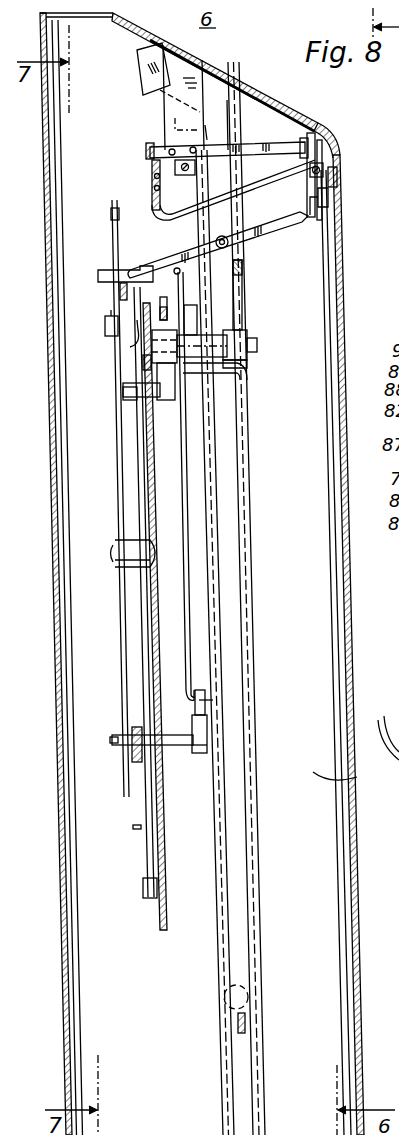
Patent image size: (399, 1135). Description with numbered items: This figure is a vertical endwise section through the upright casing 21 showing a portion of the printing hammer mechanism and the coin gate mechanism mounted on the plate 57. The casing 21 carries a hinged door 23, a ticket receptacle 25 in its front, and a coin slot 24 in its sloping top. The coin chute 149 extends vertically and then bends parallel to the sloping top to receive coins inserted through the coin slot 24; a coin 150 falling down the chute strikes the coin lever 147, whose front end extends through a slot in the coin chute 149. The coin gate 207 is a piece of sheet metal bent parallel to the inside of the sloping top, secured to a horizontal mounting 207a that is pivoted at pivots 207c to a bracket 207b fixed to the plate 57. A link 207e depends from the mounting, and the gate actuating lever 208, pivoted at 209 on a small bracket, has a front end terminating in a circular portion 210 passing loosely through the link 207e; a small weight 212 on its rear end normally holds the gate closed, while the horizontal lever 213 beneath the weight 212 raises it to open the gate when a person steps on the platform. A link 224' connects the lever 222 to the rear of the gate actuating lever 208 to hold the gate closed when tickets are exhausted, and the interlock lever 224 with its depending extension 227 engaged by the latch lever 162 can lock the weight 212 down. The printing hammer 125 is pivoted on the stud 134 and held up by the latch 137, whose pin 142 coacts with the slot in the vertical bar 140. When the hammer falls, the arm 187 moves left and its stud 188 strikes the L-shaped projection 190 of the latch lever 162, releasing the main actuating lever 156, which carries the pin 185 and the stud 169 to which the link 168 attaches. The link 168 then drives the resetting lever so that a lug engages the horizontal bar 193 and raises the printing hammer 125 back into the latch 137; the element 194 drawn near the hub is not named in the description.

The coin slot 24 is at (207, 48).
The coin gate 207 is at (140, 60).
The horizontal mounting 207a is at (270, 147).
The bracket 207b is at (295, 173).
The pivots 207c is at (150, 143).
The link 207e is at (338, 177).
The circular portion 210 is at (326, 207).
The gate actuating lever 208 is at (262, 229).
The pivot 209 is at (232, 247).
The printing hammer 125 is at (243, 283).
The stud 134 is at (260, 340).
The horizontal bar 193 is at (250, 376).
The arm 187 is at (215, 393).
The latch 137 is at (164, 300).
The coin chute 149 is at (148, 92).
The link 168 is at (199, 510).
The vertical bar 140 is at (143, 472).
The plate 57 is at (147, 440).
The interlock lever 224 is at (97, 350).
The link 224' is at (132, 481).
The latch lever 162 is at (117, 483).
The small weight 212 is at (105, 272).
The horizontal lever 213 is at (120, 292).
The depending extension 227 is at (105, 325).
The pin 142 is at (130, 347).
The rail segment 194 is at (145, 360).
The L-shaped projection 190 is at (125, 383).
The stud 188 is at (140, 400).
The pin 185 is at (118, 738).
The main actuating lever 156 is at (132, 752).
The stud 169 is at (176, 737).
The lever 222 is at (205, 702).
The coin 150 is at (250, 988).
The coin lever 147 is at (248, 1023).
The upright casing 21 is at (357, 777).
The hinged door 23 is at (355, 705).
The ticket receptacle 25 is at (387, 706).